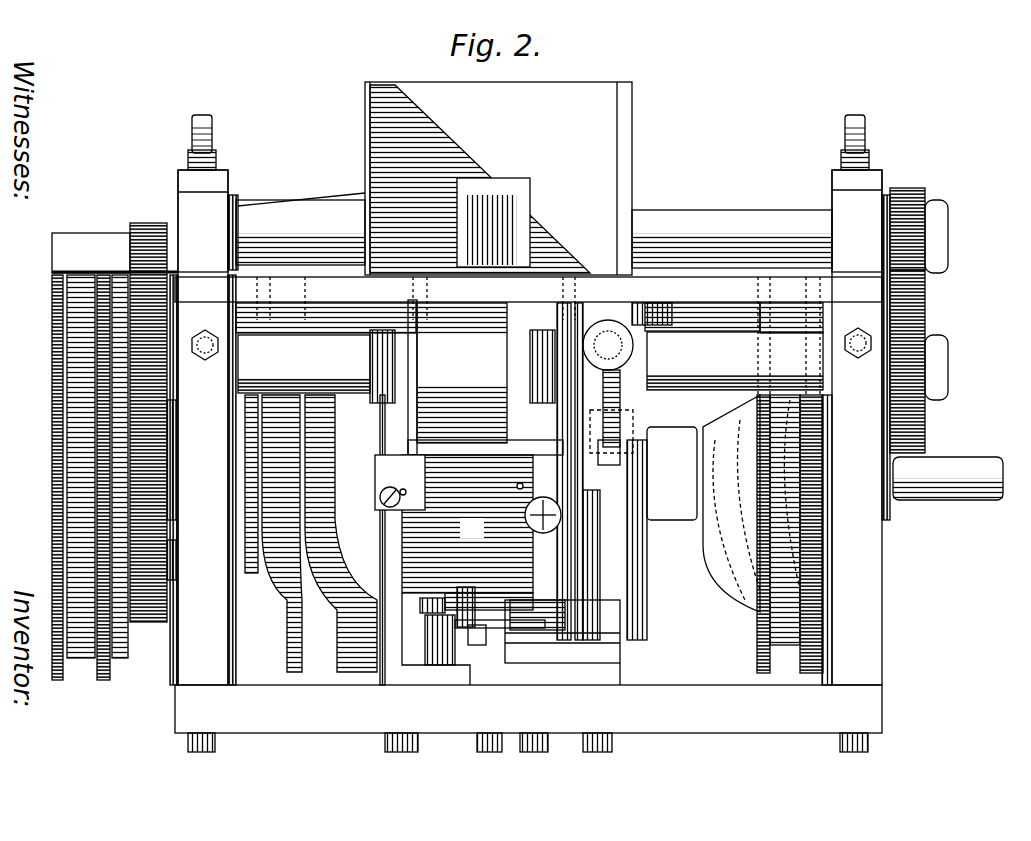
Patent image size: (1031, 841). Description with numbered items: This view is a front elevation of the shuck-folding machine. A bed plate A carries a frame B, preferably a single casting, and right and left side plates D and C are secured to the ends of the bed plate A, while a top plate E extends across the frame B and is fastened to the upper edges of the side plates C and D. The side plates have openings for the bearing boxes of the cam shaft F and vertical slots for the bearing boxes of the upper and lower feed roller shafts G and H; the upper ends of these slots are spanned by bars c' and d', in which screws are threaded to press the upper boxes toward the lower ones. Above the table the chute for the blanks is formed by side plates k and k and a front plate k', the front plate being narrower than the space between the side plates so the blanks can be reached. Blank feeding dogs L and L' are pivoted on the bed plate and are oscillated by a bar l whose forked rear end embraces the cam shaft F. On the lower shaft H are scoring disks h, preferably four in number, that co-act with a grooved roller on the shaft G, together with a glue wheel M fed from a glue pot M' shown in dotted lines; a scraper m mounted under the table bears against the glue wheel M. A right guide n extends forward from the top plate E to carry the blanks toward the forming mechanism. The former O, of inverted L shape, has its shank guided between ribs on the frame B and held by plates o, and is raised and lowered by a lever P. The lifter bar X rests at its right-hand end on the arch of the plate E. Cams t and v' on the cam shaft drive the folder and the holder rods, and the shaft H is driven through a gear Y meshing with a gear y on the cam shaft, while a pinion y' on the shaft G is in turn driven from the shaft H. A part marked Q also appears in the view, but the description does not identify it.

The bed plate A is at (528, 718).
The frame B is at (425, 650).
The left side plate C is at (203, 427).
The right side plate D is at (857, 427).
The top plate E is at (124, 234).
The cam shaft F is at (952, 470).
The upper feed roller shaft G is at (290, 215).
The lower feed roller shaft H is at (712, 330).
The lifter bar X is at (275, 203).
The chute side plate k is at (493, 178).
The chute front plate k' is at (493, 222).
The bar c' is at (213, 210).
The bar d' is at (868, 212).
The pinion y' is at (921, 218).
The gear Y is at (160, 420).
The gear y is at (178, 560).
The cam v' is at (115, 456).
The right guide n is at (311, 533).
The cam t is at (794, 540).
The bracket Q is at (385, 480).
The plates o is at (462, 488).
The former O is at (467, 532).
The lever P is at (468, 585).
The bar l is at (612, 452).
The blank feeding dog L is at (611, 456).
The blank feeding dog L' is at (485, 377).
The glue wheel M is at (659, 519).
The glue pot M' is at (672, 473).
The scraper m is at (635, 313).
The scoring disks h is at (368, 356).